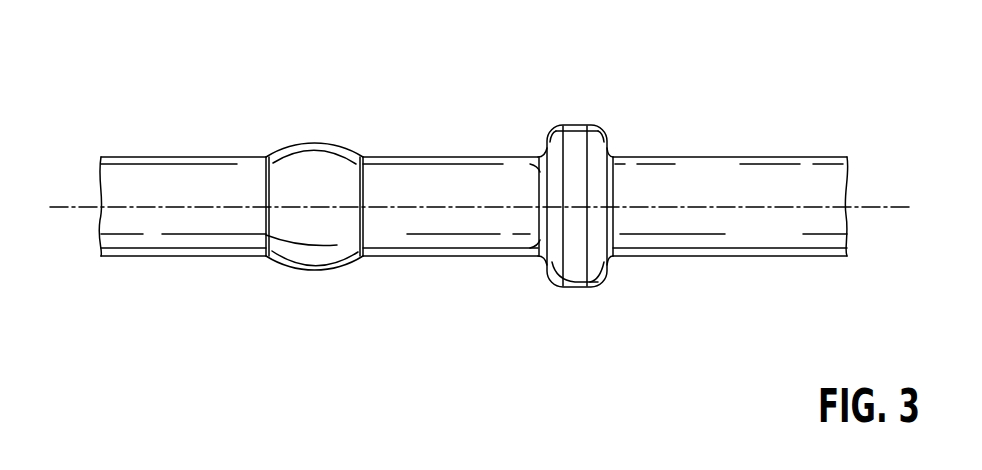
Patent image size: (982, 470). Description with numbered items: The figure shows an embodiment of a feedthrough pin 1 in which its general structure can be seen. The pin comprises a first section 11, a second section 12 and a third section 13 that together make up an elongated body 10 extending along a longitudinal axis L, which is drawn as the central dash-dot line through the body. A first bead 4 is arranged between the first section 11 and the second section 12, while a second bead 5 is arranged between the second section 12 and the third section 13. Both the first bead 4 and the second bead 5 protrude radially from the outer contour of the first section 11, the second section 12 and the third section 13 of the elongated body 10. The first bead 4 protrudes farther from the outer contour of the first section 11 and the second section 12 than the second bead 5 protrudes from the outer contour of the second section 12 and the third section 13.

The feedthrough pin 1 is at (108, 115).
The elongated body 10 is at (777, 83).
The first section 11 is at (738, 172).
The second section 12 is at (448, 173).
The third section 13 is at (174, 172).
The second bead 5 is at (312, 254).
The first bead 4 is at (575, 253).
The longitudinal axis L is at (878, 207).